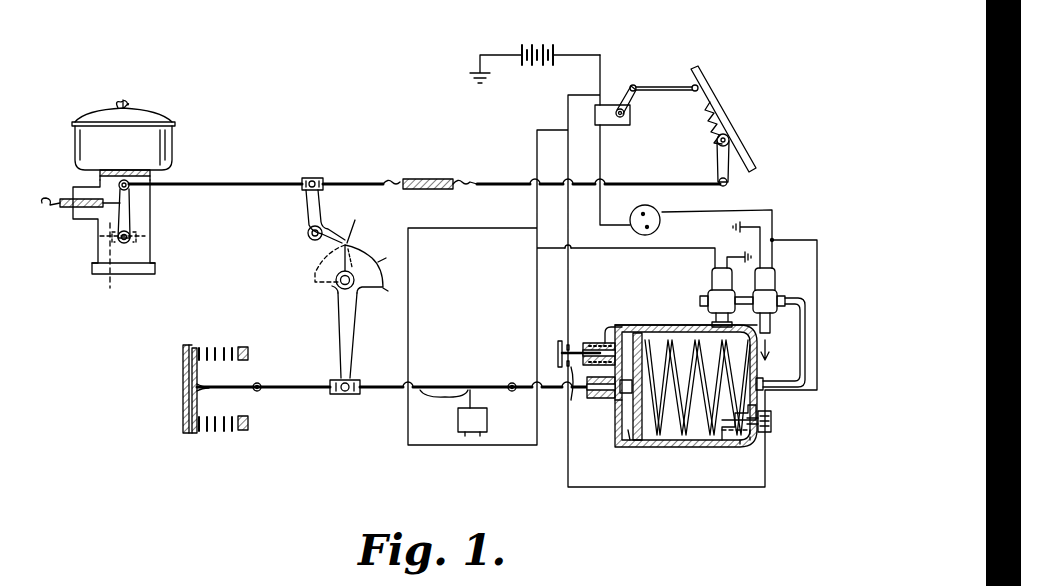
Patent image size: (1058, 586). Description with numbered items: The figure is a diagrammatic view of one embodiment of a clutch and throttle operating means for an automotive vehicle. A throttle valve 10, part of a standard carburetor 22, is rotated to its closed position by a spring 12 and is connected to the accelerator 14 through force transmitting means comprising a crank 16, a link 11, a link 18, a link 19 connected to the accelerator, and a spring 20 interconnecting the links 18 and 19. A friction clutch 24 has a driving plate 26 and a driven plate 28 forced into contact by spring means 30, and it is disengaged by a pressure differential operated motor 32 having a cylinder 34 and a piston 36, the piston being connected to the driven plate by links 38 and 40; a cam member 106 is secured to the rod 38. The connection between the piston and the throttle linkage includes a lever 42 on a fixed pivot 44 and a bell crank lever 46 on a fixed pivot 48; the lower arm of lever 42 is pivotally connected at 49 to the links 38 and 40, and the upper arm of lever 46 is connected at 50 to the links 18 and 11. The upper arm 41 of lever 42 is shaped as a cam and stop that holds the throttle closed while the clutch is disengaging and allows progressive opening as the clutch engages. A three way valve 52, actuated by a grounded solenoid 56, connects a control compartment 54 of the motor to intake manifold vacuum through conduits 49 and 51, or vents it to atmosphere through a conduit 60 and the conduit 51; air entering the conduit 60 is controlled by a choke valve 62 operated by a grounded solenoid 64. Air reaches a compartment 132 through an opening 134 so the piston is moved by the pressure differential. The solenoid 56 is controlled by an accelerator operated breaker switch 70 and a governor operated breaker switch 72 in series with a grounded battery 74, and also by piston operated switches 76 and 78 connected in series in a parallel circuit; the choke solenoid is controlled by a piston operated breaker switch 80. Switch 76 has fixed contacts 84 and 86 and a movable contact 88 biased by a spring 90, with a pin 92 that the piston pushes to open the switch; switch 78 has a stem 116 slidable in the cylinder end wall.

The throttle valve 10 is at (100, 283).
The link 11 is at (240, 182).
The spring 12 is at (68, 212).
The accelerator 14 is at (712, 92).
The crank 16 is at (130, 225).
The link 18 is at (372, 182).
The link 19 is at (628, 182).
The spring 20 is at (430, 180).
The carburetor 22 is at (178, 150).
The friction clutch 24 is at (176, 400).
The driving plate 26 is at (182, 368).
The driven plate 28 is at (190, 440).
The spring means 30 is at (217, 345).
The pressure differential operated motor 32 is at (651, 371).
The cylinder 34 is at (680, 447).
The piston 36 is at (638, 330).
The link 38 is at (487, 385).
The link 40 is at (272, 390).
The upper arm (cam) 41 is at (390, 272).
The lever 42 is at (335, 348).
The fixed pivot 44 is at (340, 285).
The bell crank lever 46 is at (309, 214).
The fixed pivot 48 is at (308, 235).
The pivot connection / conduit 49 is at (352, 395).
The pivot connection 50 is at (314, 178).
The conduit 51 is at (766, 386).
The three way valve 52 is at (814, 285).
The control compartment 54 is at (704, 440).
The solenoid 56 is at (776, 275).
The conduit 60 is at (744, 297).
The choke valve 62 is at (706, 296).
The solenoid 64 is at (716, 280).
The accelerator operated breaker switch 70 is at (612, 105).
The governor operated breaker switch 72 is at (660, 224).
The battery 74 is at (548, 45).
The piston operated switch 76 is at (558, 343).
The piston operated breaker switch 78 is at (812, 436).
The piston operated breaker switch 80 is at (487, 418).
The fixed switch contact 84 is at (576, 348).
The fixed switch contact 86 is at (574, 390).
The movable switch contact 88 is at (557, 352).
The spring 90 is at (614, 400).
The pin 92 is at (590, 342).
The cam member 106 is at (447, 398).
The stem 116 is at (742, 450).
The compartment 132 is at (630, 432).
The opening 134 is at (618, 420).